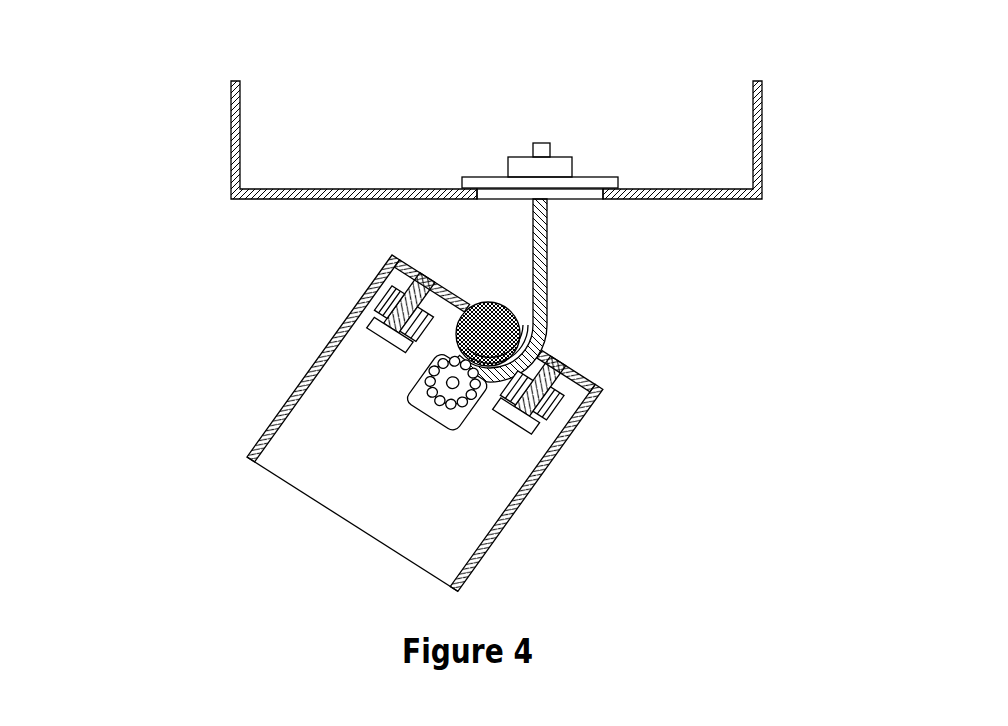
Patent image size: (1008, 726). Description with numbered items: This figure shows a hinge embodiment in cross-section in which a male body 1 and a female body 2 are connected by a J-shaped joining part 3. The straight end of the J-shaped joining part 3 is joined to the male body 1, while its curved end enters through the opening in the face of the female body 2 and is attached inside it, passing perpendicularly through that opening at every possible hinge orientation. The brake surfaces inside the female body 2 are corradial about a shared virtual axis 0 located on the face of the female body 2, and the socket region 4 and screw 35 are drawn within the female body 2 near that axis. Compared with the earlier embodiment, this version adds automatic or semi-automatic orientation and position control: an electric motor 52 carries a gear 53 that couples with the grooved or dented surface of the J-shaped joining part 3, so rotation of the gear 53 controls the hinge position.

The male body 1 is at (222, 178).
The female body 2 is at (500, 558).
The J-shaped joining part 3 is at (552, 248).
The shared virtual axis 0 is at (496, 300).
The ball socket 4 is at (498, 353).
The fastening screw 35 is at (440, 344).
The electric motor 52 is at (452, 430).
The gear 53 is at (438, 386).